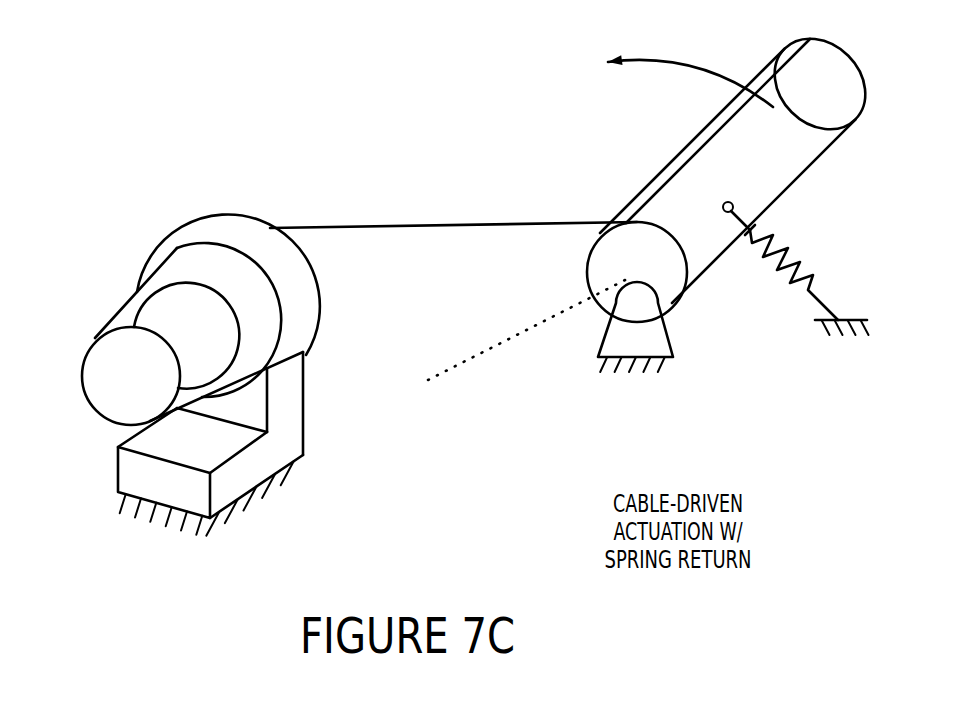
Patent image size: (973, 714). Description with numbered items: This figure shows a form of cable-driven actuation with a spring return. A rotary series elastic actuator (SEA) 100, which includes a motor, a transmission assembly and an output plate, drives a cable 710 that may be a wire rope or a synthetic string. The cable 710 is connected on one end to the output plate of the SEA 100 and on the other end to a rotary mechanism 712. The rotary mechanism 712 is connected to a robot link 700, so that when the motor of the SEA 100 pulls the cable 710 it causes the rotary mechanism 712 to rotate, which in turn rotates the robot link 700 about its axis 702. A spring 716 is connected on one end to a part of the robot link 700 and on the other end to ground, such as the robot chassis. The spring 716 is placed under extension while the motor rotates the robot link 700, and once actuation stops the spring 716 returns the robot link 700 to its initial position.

The rotary series elastic actuator (SEA) 100 is at (310, 369).
The robot link 700 is at (864, 101).
The axis 702 is at (515, 331).
The cable 710 is at (448, 225).
The rotary mechanism 712 is at (615, 252).
The spring 716 is at (805, 262).